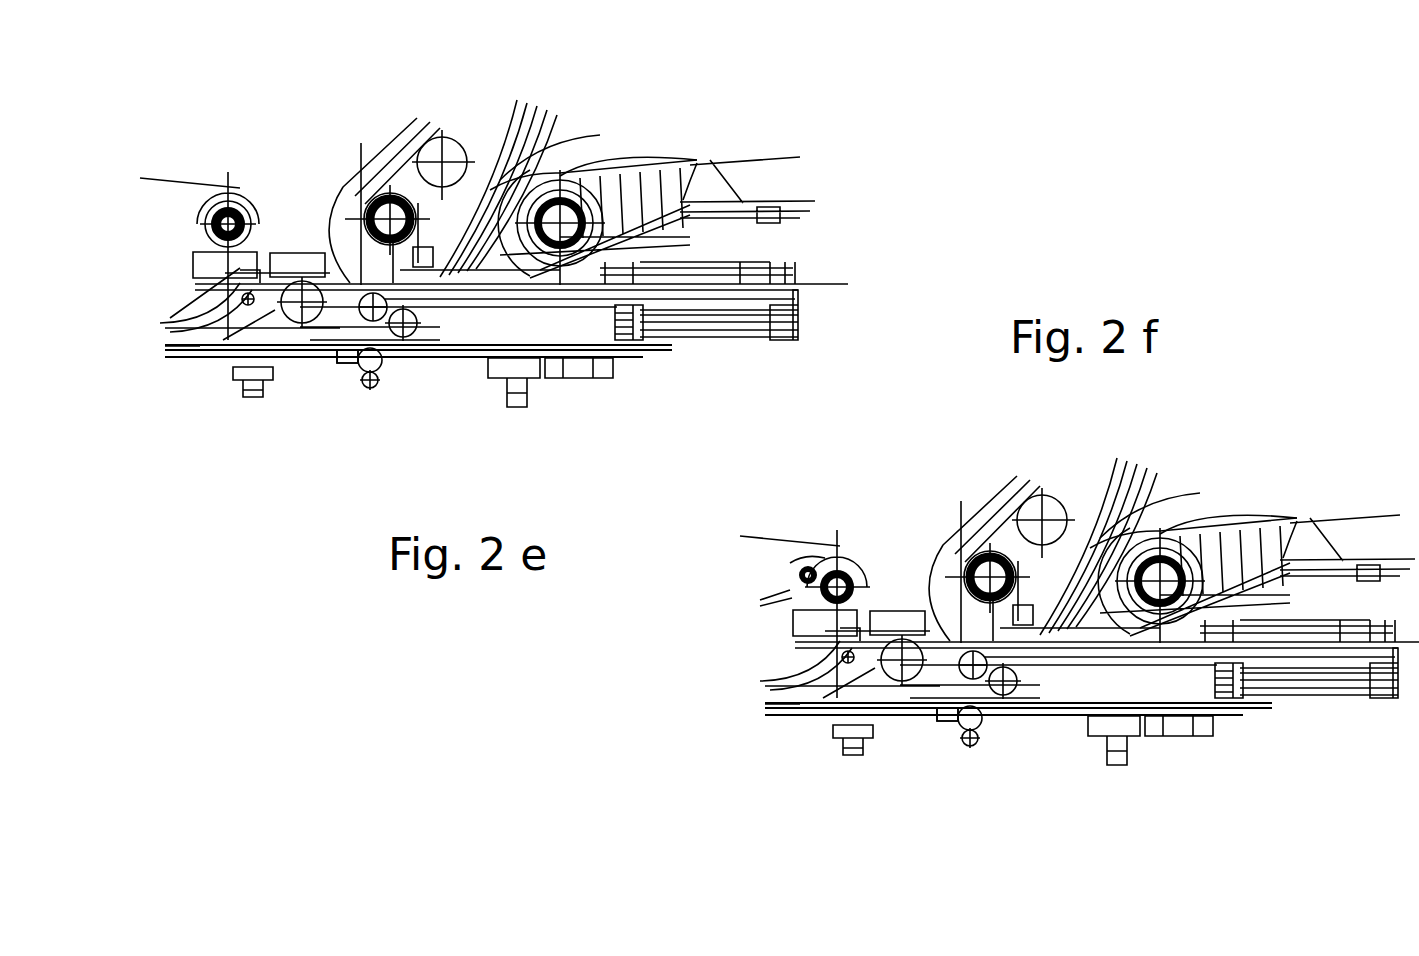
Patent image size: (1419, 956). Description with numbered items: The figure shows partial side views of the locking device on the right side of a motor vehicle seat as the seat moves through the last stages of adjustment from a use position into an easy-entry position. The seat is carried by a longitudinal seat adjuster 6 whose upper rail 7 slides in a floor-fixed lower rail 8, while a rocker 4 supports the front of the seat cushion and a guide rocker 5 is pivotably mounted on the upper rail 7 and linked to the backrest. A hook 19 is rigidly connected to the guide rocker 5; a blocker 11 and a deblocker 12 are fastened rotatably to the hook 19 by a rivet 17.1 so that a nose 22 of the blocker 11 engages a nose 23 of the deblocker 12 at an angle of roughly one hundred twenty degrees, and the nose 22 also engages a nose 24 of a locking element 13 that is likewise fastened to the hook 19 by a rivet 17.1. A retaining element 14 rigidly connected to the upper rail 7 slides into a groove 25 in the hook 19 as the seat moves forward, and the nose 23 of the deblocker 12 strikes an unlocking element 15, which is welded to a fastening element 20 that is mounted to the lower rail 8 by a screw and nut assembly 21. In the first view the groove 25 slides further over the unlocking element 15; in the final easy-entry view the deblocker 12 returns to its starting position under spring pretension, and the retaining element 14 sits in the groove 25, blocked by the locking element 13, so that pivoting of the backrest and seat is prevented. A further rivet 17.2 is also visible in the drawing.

In FIG. 2e, the rocker 4 is at (652, 190).
In FIG. 2f, the rocker 4 is at (1252, 548).
In FIG. 2e, the guide rocker 5 is at (445, 151).
In FIG. 2f, the guide rocker 5 is at (1045, 509).
In FIG. 2e, the longitudinal seat adjuster 6 is at (688, 350).
In FIG. 2f, the longitudinal seat adjuster 6 is at (1050, 753).
In FIG. 2e, the upper rail 7 is at (719, 310).
In FIG. 2f, the upper rail 7 is at (1319, 671).
In FIG. 2e, the lower rail 8 is at (597, 323).
In FIG. 2f, the lower rail 8 is at (1217, 683).
In FIG. 2e, the blocker 11 is at (250, 303).
In FIG. 2f, the blocker 11 is at (774, 654).
In FIG. 2e, the deblocker 12 is at (535, 172).
In FIG. 2f, the deblocker 12 is at (1169, 547).
In FIG. 2e, the locking element 13 is at (403, 373).
In FIG. 2f, the locking element 13 is at (1044, 750).
In FIG. 2e, the retaining element 14 is at (683, 200).
In FIG. 2f, the retaining element 14 is at (1303, 504).
In FIG. 2e, the unlocking element 15 is at (373, 388).
In FIG. 2f, the unlocking element 15 is at (984, 767).
In FIG. 2e, the rivet 17.1 is at (504, 170).
In FIG. 2f, the rivet 17.1 is at (1103, 528).
In FIG. 2e, the lower lever 17.2 is at (273, 305).
In FIG. 2f, the lower lever 17.2 is at (815, 710).
In FIG. 2e, the hook 19 is at (343, 227).
In FIG. 2f, the hook 19 is at (957, 559).
In FIG. 2e, the fastening element 20 is at (327, 367).
In FIG. 2f, the fastening element 20 is at (886, 811).
In FIG. 2e, the screw and nut assembly 21 is at (243, 392).
In FIG. 2f, the screw and nut assembly 21 is at (846, 770).
In FIG. 2e, the nose 22 is at (357, 367).
In FIG. 2f, the nose 22 is at (927, 756).
In FIG. 2e, the nose 23 is at (354, 193).
In FIG. 2f, the nose 23 is at (953, 552).
In FIG. 2e, the nose 24 is at (357, 382).
In FIG. 2f, the nose 24 is at (1006, 783).
In FIG. 2e, the groove 25 is at (318, 250).
In FIG. 2f, the groove 25 is at (853, 587).